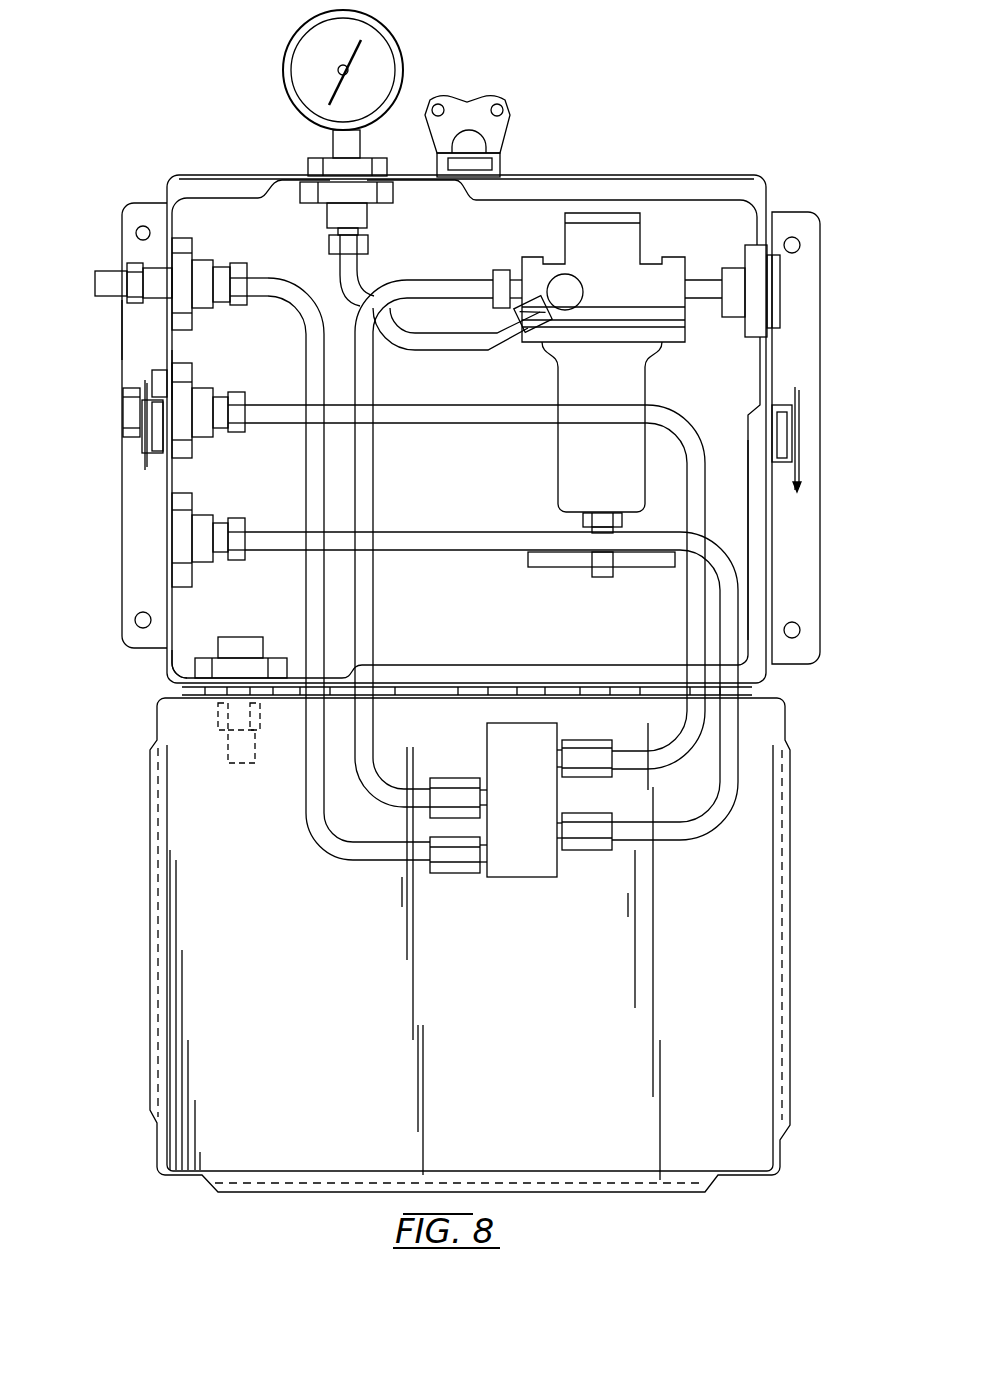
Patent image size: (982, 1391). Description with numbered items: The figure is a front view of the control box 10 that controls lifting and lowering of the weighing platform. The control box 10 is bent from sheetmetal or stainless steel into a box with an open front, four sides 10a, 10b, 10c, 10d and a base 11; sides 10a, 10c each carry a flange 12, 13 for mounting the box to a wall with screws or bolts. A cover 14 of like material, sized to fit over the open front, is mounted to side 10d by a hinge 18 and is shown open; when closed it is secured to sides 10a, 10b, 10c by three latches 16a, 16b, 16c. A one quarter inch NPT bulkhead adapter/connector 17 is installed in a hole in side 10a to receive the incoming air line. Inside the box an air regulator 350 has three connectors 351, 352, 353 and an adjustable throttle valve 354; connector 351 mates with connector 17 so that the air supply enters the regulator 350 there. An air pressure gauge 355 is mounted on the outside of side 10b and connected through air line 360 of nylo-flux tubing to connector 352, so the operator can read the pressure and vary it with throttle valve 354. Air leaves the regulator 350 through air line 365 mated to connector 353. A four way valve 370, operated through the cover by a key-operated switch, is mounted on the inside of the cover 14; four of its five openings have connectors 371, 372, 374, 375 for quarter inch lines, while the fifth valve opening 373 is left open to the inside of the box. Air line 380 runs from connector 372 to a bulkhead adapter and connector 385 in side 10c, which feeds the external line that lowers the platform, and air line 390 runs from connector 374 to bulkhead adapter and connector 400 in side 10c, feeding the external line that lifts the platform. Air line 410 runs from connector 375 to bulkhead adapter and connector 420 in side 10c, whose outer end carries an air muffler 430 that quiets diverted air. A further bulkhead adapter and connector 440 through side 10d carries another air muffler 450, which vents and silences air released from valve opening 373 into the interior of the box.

The control box 10 is at (702, 120).
The side 10a is at (765, 525).
The side 10b is at (735, 187).
The side 10c is at (182, 373).
The side 10d is at (168, 670).
The base 11 is at (486, 487).
The flange 12 is at (805, 345).
The flange 13 is at (145, 340).
The cover 14 is at (763, 908).
The latch 16a is at (795, 435).
The latch 16b is at (505, 122).
The latch 16c is at (143, 437).
The bulkhead adapter/connector 17 is at (775, 295).
The hinge 18 is at (753, 697).
The air regulator 350 is at (630, 378).
The connector 351 is at (708, 287).
The connector 352 is at (505, 280).
The connector 353 is at (558, 287).
The adjustable throttle valve 354 is at (613, 575).
The air pressure gauge 355 is at (387, 62).
The air line 360 is at (357, 285).
The air line 365 is at (472, 287).
The four way valve 370 is at (532, 852).
The connector 371 is at (445, 803).
The connector 372 is at (575, 758).
The valve opening 373 is at (478, 738).
The connector 374 is at (582, 832).
The connector 375 is at (458, 858).
The air line 380 is at (695, 735).
The bulkhead adapter and connector 385 is at (150, 393).
The air line 390 is at (729, 785).
The bulkhead adapter and connector 400 is at (178, 541).
The air line 410 is at (313, 802).
The bulkhead adapter and connector 420 is at (182, 262).
The air muffler 430 is at (93, 283).
The bulkhead adapter and connector 440 is at (210, 663).
The air muffler 450 is at (240, 747).